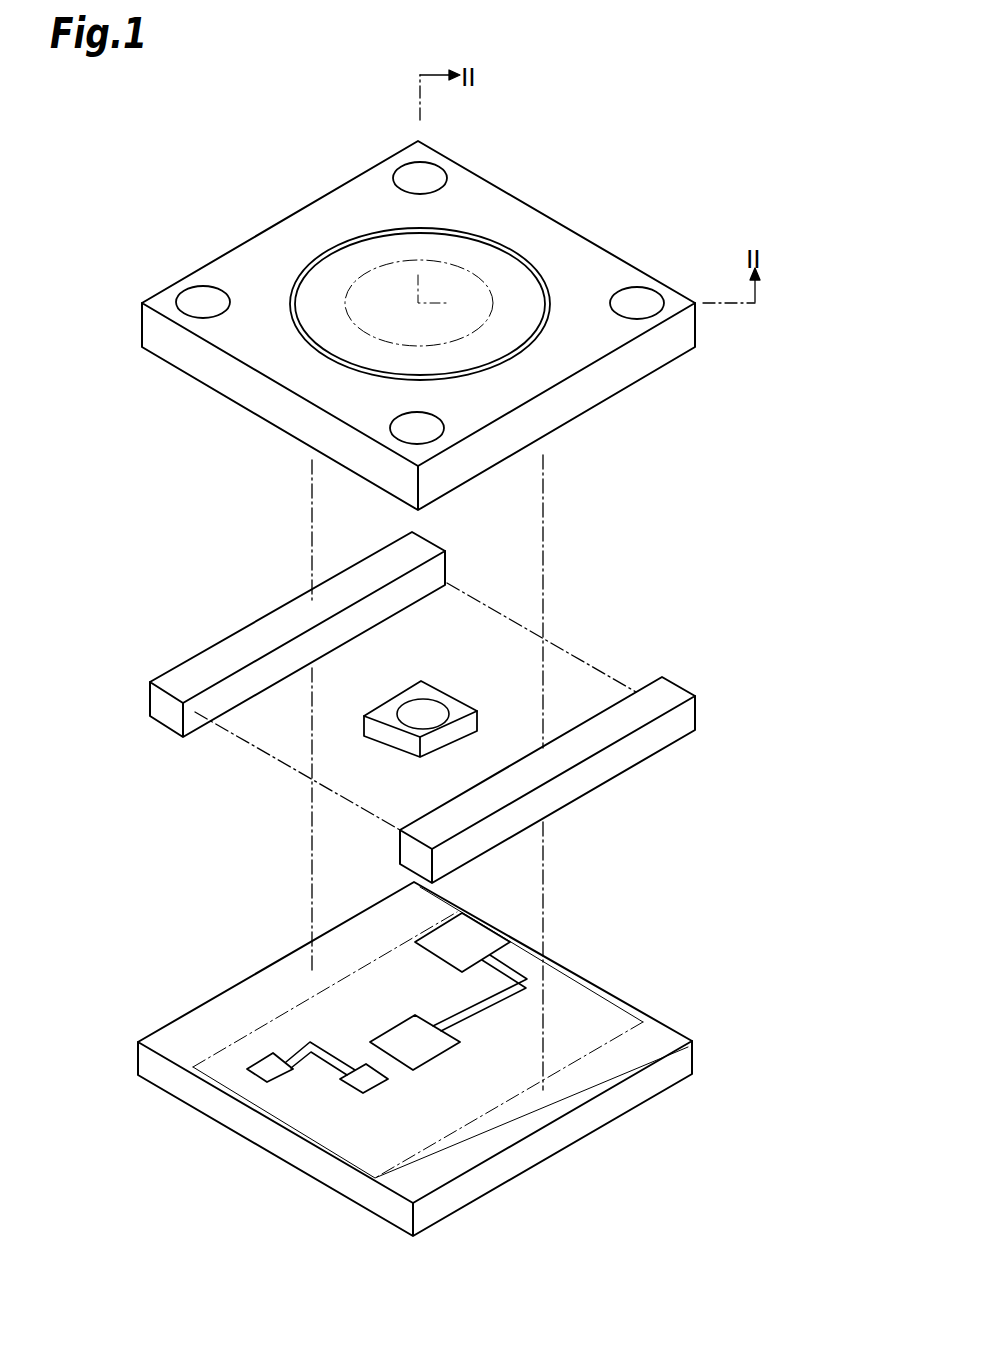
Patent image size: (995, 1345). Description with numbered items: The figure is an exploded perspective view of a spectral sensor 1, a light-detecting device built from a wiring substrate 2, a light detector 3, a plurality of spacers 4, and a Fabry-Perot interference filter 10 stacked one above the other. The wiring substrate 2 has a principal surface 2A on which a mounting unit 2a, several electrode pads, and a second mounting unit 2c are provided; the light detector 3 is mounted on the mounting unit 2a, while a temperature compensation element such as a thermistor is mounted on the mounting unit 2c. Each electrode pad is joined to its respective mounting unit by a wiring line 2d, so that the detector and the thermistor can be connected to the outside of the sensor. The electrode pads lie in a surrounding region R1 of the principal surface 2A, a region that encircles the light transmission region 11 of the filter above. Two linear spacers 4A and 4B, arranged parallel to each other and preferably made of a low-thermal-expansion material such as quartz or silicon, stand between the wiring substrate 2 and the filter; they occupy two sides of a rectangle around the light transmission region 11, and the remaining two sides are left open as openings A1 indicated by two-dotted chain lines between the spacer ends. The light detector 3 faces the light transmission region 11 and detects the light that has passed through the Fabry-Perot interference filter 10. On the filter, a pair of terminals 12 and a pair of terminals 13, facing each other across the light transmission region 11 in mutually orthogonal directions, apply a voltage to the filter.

The spectral sensor 1 is at (648, 110).
The wiring substrate 2 is at (688, 1026).
The principal surface 2A is at (574, 988).
The mounting unit 2a is at (412, 1035).
The mounting unit 2c is at (360, 1082).
The wiring line 2d is at (513, 972).
The light detector 3 is at (423, 708).
The spacers 4 is at (430, 707).
The spacer 4A is at (191, 675).
The spacer 4B is at (659, 697).
The Fabry-Perot interference filter 10 is at (547, 228).
The light transmission region 11 is at (353, 284).
The terminals 12 is at (424, 176).
The terminals 13 is at (203, 300).
The openings A1 is at (448, 583).
The surrounding region R1 is at (508, 1100).